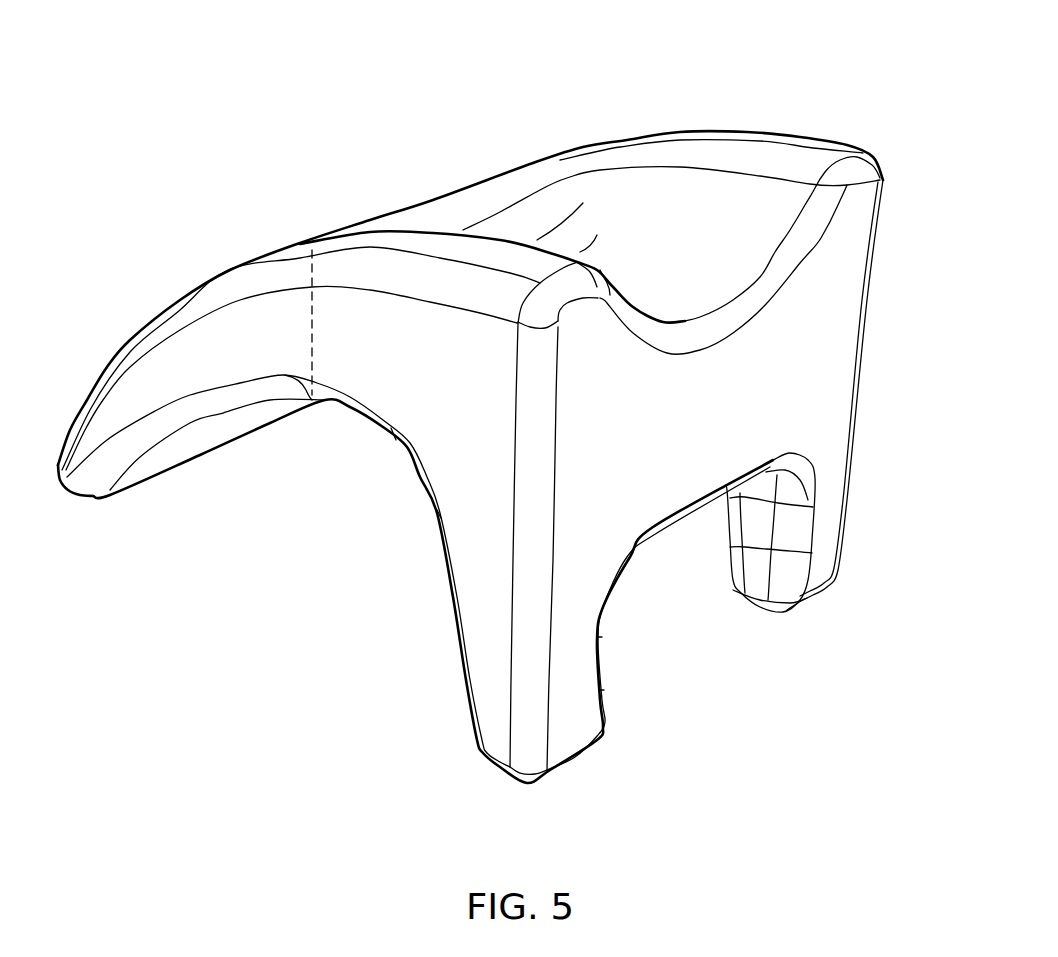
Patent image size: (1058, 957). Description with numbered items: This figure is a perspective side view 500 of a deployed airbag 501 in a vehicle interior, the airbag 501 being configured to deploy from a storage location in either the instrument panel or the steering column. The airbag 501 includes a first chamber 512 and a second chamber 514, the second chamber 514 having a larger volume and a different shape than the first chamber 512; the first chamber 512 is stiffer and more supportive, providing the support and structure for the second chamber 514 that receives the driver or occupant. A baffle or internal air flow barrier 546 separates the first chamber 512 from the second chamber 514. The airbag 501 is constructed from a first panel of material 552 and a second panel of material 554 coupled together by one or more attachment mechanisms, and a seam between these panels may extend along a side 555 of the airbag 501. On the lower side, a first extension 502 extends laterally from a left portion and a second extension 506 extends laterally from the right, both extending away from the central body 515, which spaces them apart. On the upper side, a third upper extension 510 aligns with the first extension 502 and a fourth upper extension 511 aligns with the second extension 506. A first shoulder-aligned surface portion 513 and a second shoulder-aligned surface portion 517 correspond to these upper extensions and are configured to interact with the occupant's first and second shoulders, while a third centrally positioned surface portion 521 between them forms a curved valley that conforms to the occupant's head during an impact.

The perspective side view 500 is at (202, 64).
The airbag 501 is at (346, 223).
The first extension 502 is at (570, 737).
The second extension 506 is at (823, 557).
The third upper extension 510 is at (572, 283).
The fourth upper extension 511 is at (862, 170).
The first chamber 512 is at (143, 383).
The first shoulder-aligned surface portion 513 is at (588, 330).
The second chamber 514 is at (823, 403).
The central body 515 is at (723, 307).
The second shoulder-aligned surface portion 517 is at (858, 196).
The third centrally positioned surface portion 521 is at (710, 310).
The baffle or internal air flow barrier 546 is at (312, 343).
The first panel of material 552 is at (228, 268).
The second panel of material 554 is at (215, 415).
The side 555 is at (473, 447).